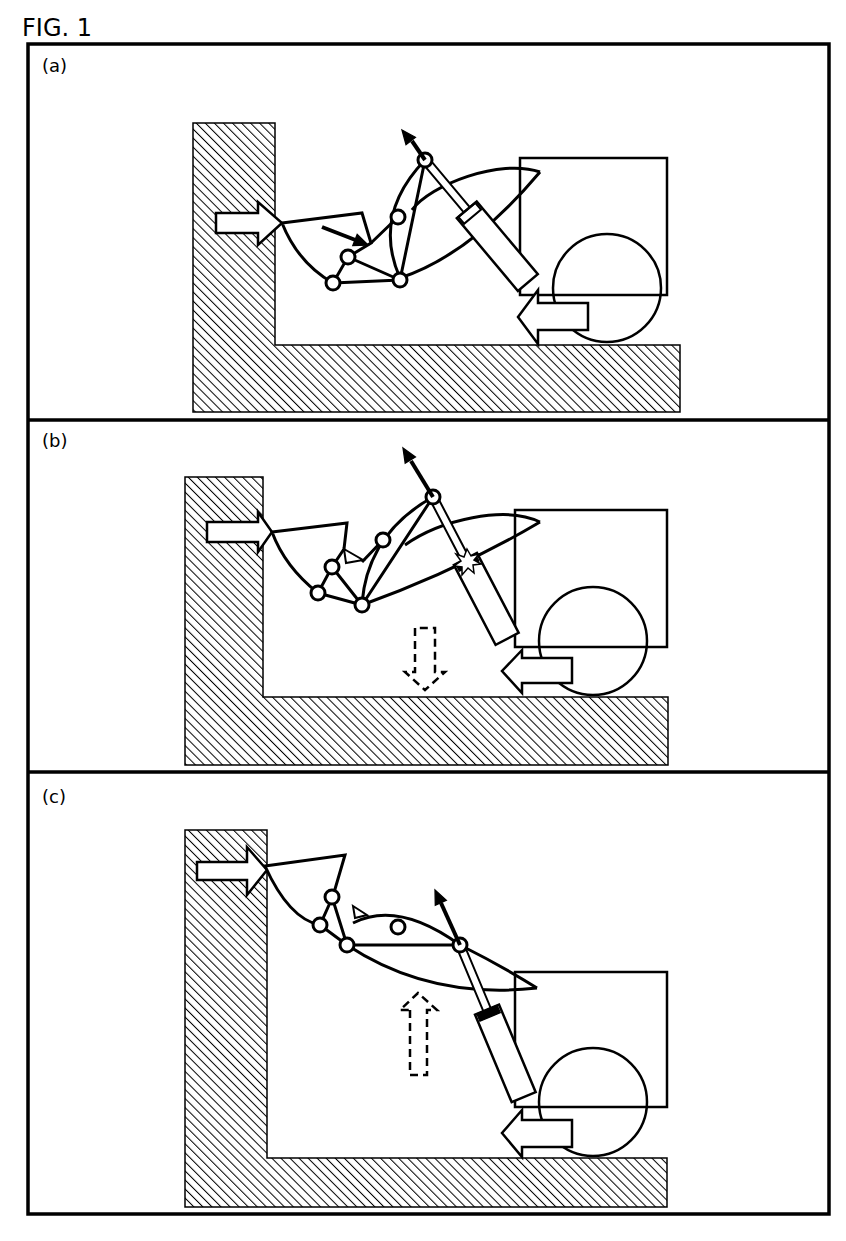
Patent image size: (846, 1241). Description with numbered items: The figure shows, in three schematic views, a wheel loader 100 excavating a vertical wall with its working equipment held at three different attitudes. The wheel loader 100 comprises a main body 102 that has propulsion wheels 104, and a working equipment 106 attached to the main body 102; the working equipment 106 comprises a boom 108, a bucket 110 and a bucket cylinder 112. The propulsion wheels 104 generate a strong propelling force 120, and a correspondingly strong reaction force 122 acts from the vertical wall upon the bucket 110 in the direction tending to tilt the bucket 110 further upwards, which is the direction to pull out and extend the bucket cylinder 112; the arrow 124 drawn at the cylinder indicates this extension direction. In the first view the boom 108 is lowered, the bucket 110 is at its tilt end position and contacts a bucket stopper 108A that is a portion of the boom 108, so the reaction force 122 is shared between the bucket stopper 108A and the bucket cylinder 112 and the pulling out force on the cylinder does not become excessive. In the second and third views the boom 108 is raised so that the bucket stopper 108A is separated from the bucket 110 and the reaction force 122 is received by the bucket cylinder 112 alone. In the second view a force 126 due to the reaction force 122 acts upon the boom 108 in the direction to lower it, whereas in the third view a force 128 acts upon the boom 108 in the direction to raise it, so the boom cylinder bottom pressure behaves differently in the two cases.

The wheel loader 100 is at (605, 200).
The main body 102 is at (582, 160).
The propulsion wheels 104 is at (650, 250).
The working equipment 106 is at (456, 130).
The boom 108 is at (440, 247).
The bucket stopper 108A is at (364, 241).
The bucket 110 is at (305, 215).
The bucket cylinder 112 is at (472, 210).
The propelling force 120 is at (545, 316).
The reaction force 122 is at (233, 222).
The cylinder extension direction 124 is at (405, 130).
The force in the direction to lower the boom 126 is at (440, 653).
The force in the direction to raise the boom 128 is at (412, 1074).